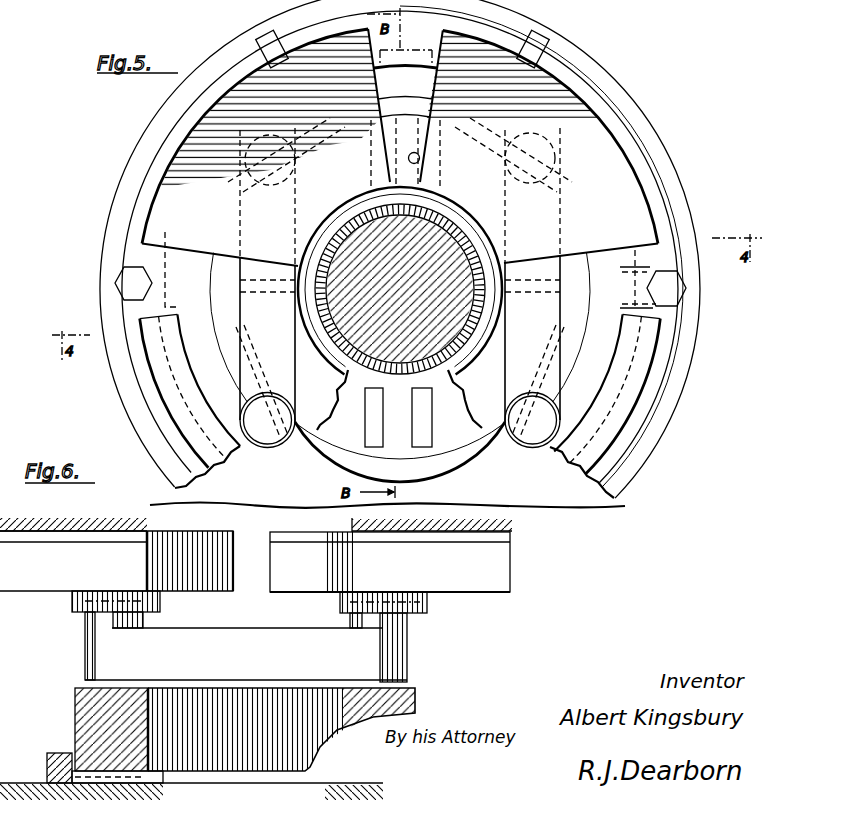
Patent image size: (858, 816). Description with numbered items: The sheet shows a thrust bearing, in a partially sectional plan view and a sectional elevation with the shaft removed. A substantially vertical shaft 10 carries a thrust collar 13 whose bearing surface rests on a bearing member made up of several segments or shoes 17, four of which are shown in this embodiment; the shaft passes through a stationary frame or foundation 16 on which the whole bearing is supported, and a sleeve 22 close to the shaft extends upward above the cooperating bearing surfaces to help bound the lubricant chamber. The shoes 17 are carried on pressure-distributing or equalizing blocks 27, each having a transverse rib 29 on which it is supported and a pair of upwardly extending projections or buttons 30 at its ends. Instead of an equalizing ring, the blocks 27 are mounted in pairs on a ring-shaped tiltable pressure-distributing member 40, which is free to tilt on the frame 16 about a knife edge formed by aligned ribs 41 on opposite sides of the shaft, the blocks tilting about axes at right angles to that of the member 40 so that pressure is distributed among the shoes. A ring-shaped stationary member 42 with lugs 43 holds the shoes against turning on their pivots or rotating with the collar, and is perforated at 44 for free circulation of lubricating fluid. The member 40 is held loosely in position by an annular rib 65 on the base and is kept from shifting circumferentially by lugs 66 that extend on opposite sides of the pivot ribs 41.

In FIG. 5, the shaft 10 is at (450, 317).
In FIG. 6, the thrust collar 13 is at (88, 526).
In FIG. 5, the stationary frame or foundation 16 is at (553, 493).
In FIG. 5, the shoes 17 is at (176, 196).
In FIG. 6, the shoes 17 is at (255, 561).
In FIG. 5, the sleeve 22 is at (330, 333).
In FIG. 6, the pressure-distributing or equalizing blocks 27 is at (85, 645).
In FIG. 5, the transverse rib 29 is at (400, 282).
In FIG. 6, the transverse rib 29 is at (247, 688).
In FIG. 5, the upwardly extending projections or buttons 30 is at (258, 432).
In FIG. 6, the upwardly extending projections or buttons 30 is at (143, 618).
In FIG. 5, the tiltable pressure-distributing member 40 is at (320, 402).
In FIG. 6, the tiltable pressure-distributing member 40 is at (77, 706).
In FIG. 5, the ribs 41 is at (427, 158).
In FIG. 6, the ribs 41 is at (90, 777).
In FIG. 5, the ring-shaped stationary member 42 is at (165, 150).
In FIG. 5, the lugs 43 is at (147, 244).
In FIG. 5, the perforations 44 is at (660, 317).
In FIG. 5, the annular rib 65 is at (458, 460).
In FIG. 6, the annular rib 65 is at (55, 753).
In FIG. 5, the lugs 66 is at (422, 435).
In FIG. 6, the lugs 66 is at (163, 785).